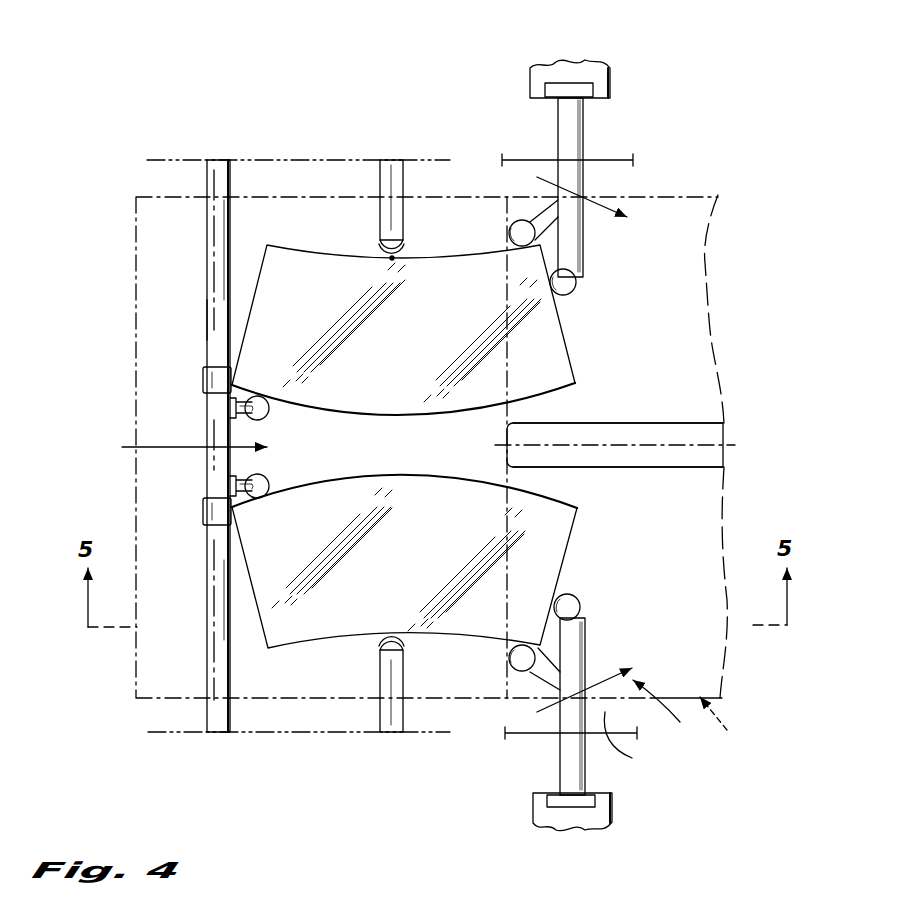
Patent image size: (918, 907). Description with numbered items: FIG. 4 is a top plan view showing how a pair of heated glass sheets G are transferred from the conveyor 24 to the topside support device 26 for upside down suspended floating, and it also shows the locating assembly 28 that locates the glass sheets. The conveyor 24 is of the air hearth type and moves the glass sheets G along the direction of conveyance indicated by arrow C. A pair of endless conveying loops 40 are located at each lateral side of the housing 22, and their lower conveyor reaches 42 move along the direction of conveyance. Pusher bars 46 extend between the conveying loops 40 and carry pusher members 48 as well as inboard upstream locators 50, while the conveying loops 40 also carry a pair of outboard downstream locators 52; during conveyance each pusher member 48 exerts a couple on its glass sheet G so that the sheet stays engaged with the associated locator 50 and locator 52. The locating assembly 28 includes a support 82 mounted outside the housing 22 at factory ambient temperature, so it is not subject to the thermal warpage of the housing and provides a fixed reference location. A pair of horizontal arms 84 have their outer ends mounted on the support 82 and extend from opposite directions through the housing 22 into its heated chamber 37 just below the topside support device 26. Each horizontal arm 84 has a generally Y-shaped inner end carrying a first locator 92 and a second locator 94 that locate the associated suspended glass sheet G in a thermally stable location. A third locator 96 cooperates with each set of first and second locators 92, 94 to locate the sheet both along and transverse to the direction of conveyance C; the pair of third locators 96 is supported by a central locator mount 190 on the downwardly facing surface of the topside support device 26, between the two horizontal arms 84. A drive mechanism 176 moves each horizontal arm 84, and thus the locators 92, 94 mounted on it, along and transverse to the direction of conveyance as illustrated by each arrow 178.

The housing 22 is at (612, 158).
The conveyor 24 is at (308, 702).
The topside support device 26 is at (727, 723).
The locating assembly 28 is at (669, 715).
The heated chamber 37 is at (633, 748).
The endless conveying loops 40 is at (270, 160).
The lower conveyor reaches 42 is at (235, 158).
The pusher bars 46 is at (207, 318).
The pusher member 48 is at (208, 503).
The locator 50 is at (268, 415).
The locator 52 is at (395, 258).
The support 82 is at (610, 86).
The horizontal arm 84 is at (560, 128).
The first locator 92 is at (576, 290).
The second locator 94 is at (510, 228).
The third locator 96 is at (708, 422).
The drive mechanism 176 is at (556, 85).
The arrow 178 is at (612, 225).
The central locator mount 190 is at (723, 445).
The arrow C is at (153, 445).
The glass sheet G is at (387, 417).